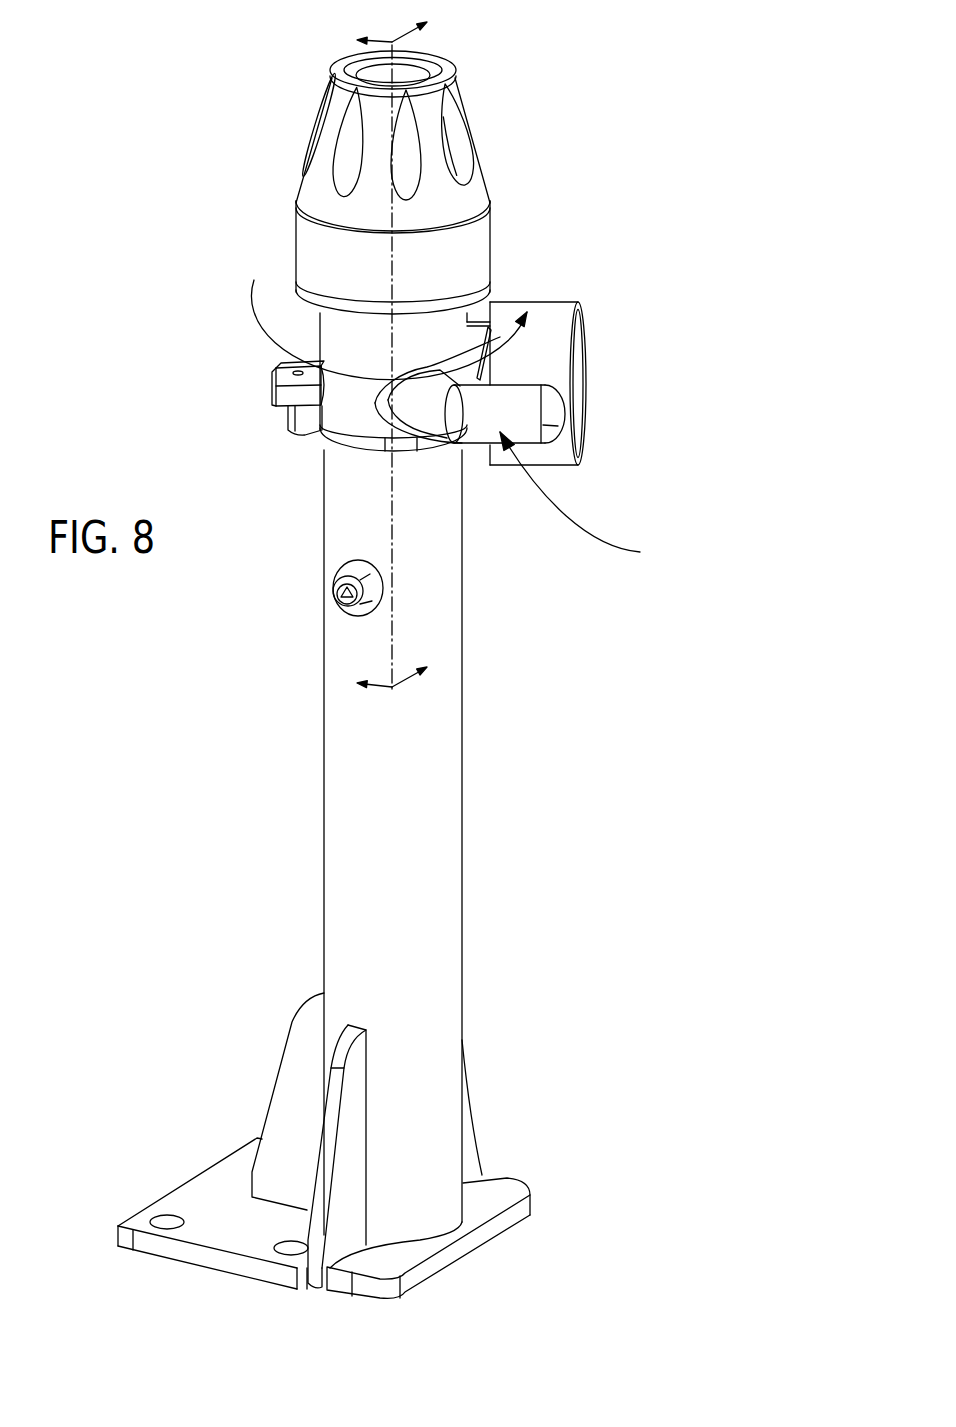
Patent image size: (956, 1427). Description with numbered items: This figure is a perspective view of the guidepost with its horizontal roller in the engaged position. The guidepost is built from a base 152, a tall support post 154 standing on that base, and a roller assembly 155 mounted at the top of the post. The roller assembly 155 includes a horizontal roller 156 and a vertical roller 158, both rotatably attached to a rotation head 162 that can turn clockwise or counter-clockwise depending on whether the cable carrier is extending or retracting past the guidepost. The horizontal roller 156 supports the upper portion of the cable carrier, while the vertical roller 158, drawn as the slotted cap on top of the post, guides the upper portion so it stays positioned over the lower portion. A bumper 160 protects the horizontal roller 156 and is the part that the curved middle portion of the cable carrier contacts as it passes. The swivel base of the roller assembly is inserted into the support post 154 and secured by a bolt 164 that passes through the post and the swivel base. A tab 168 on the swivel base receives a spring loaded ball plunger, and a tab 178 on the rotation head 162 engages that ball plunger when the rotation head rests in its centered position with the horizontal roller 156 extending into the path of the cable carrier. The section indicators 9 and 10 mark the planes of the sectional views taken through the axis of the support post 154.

The section line 9- 9 is at (419, 348).
The section line 10- 10 is at (358, 362).
The base 152 is at (220, 1243).
The support post 154 is at (460, 888).
The roller assembly 155 is at (593, 500).
The horizontal roller 156 is at (578, 304).
The vertical roller 158 is at (477, 193).
The bumper 160 is at (550, 433).
The rotation head 162 is at (345, 405).
The bolt 164 is at (340, 606).
The tab 168 is at (290, 413).
The tab 178 is at (276, 371).